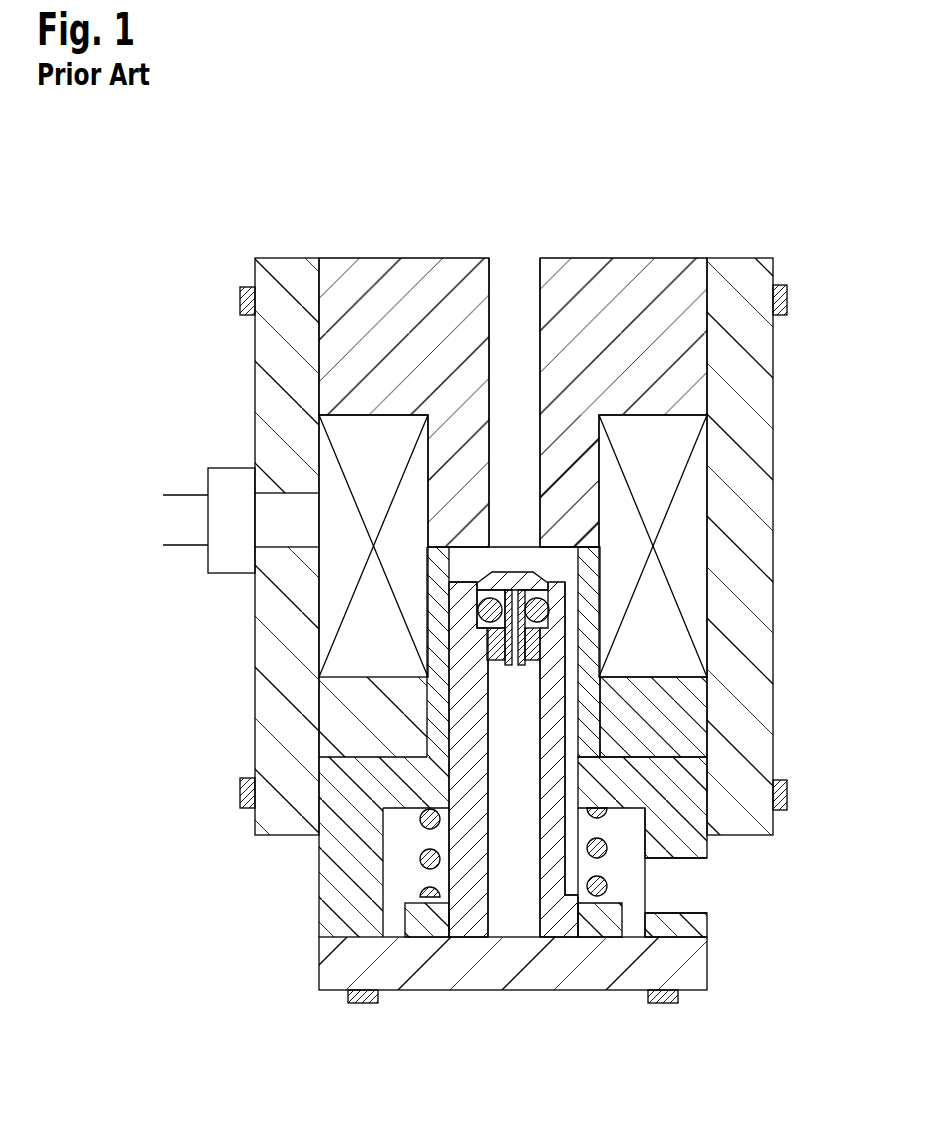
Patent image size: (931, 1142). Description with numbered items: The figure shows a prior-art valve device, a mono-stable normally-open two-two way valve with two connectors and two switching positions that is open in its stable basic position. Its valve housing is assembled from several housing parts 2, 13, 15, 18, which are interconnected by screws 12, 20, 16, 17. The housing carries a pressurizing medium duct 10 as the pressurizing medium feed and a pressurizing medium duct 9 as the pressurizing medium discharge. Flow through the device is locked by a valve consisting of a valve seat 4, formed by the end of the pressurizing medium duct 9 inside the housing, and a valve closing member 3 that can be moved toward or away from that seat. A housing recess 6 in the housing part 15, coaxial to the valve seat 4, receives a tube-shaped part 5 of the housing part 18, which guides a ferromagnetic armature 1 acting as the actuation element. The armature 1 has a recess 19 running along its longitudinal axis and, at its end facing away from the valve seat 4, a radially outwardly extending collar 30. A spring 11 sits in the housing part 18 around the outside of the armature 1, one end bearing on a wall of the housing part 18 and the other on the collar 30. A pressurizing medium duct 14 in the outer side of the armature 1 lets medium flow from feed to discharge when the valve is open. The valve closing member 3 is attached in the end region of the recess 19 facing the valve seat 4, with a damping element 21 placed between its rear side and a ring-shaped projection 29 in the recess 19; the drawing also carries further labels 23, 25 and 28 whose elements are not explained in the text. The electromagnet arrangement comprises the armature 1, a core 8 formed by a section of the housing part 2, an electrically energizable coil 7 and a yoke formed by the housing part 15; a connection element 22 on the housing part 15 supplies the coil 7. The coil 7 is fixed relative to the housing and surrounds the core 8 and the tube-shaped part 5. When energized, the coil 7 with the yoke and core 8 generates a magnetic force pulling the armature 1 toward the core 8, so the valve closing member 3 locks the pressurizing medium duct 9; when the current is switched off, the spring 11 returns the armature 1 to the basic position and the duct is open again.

The armature 1 is at (445, 883).
The housing part 2 is at (666, 282).
The valve closing member 3 is at (540, 583).
The valve seat 4 is at (545, 548).
The tube-shaped part 5 is at (588, 694).
The housing recess 6 is at (596, 740).
The coil 7 is at (690, 488).
The core 8 is at (577, 487).
The pressurizing medium duct 9 is at (513, 282).
The pressurizing medium duct 10 is at (690, 896).
The spring 11 is at (605, 887).
The screw 12 is at (662, 1003).
The housing part 13 is at (695, 960).
The pressurizing medium duct 14 is at (571, 885).
The housing part 15 is at (295, 733).
The screw 16 is at (240, 795).
The screw 17 is at (240, 300).
The housing part 18 is at (340, 912).
The recess 19 is at (515, 915).
The screw 20 is at (362, 1003).
The damping element 21 is at (490, 612).
The connection element 22 is at (228, 480).
The seal 23 is at (540, 650).
The air gap 25 is at (488, 578).
The sealing element 28 is at (495, 652).
The ring-shaped projection 29 is at (503, 635).
The collar 30 is at (437, 928).